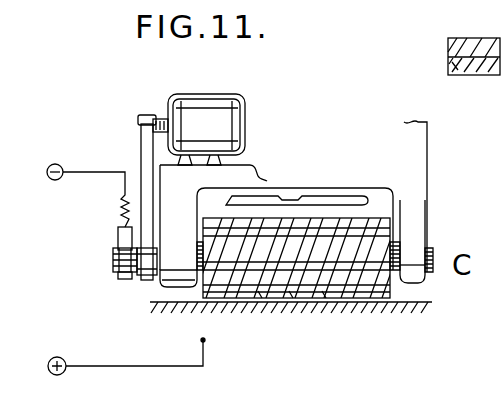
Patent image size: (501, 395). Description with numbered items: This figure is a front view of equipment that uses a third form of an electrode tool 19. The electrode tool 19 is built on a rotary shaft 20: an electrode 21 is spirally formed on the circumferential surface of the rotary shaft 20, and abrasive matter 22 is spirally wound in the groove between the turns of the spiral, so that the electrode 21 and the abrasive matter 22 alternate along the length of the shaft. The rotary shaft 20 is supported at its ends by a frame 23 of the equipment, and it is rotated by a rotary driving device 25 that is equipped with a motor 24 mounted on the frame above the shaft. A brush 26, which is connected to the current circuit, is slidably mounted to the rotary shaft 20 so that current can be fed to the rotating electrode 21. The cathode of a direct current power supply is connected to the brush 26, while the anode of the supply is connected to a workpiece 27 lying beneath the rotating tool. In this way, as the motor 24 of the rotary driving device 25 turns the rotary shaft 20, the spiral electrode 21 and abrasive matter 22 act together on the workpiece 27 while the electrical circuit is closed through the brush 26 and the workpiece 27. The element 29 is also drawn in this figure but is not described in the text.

The electrode tool 19 is at (372, 216).
The rotary shaft 20 is at (386, 272).
The electrode 21 is at (294, 290).
The abrasive matter 22 is at (259, 288).
The frame 23 is at (410, 232).
The motor 24 is at (213, 121).
The rotary driving device 25 is at (138, 130).
The brush 26 is at (118, 234).
The workpiece 27 is at (330, 300).
The layered sheet 29 is at (449, 60).